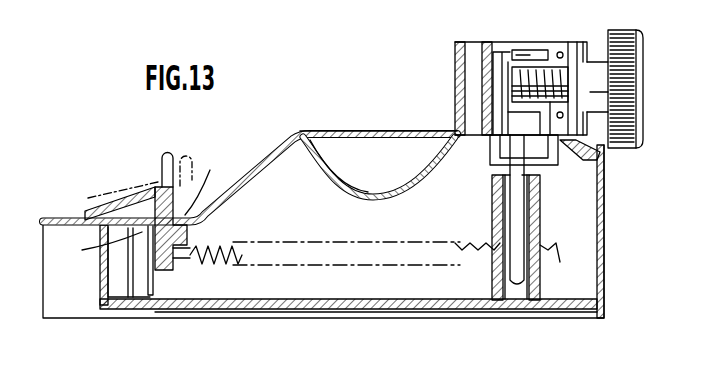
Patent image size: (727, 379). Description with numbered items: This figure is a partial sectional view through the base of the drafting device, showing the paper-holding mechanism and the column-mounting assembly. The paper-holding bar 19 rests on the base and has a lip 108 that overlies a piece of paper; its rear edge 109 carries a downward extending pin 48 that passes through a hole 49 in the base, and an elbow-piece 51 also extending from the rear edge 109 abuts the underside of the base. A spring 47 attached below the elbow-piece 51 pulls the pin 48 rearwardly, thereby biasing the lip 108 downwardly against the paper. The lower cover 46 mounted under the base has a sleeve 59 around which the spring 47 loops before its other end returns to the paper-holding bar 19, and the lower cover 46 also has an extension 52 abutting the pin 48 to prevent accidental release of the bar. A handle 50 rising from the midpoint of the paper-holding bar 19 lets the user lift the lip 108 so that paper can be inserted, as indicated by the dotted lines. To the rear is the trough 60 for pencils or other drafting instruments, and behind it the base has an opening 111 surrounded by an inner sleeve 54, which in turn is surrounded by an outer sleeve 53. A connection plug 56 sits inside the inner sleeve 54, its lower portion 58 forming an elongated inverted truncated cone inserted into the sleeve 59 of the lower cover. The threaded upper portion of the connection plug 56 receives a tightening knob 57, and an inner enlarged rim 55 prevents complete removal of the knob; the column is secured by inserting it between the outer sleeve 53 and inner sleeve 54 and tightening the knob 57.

The paper-holding bar 19 is at (117, 178).
The lower cover 46 is at (292, 306).
The spring 47 is at (216, 266).
The pin 48 is at (170, 272).
The hole 49 is at (100, 249).
The handle 50 is at (177, 165).
The elbow-piece 51 is at (182, 214).
The extension 52 is at (140, 284).
The outer sleeve 53 is at (456, 95).
The inner sleeve 54 is at (470, 48).
The inner enlarged rim 55 is at (518, 84).
The connection plug 56 is at (470, 60).
The tightening knob 57 is at (594, 120).
The lower portion of connection plug 58 is at (520, 190).
The sleeve 59 is at (540, 220).
The trough 60 is at (351, 129).
The lip 108 is at (86, 212).
The rear edge 109 is at (200, 185).
The opening 111 is at (586, 168).